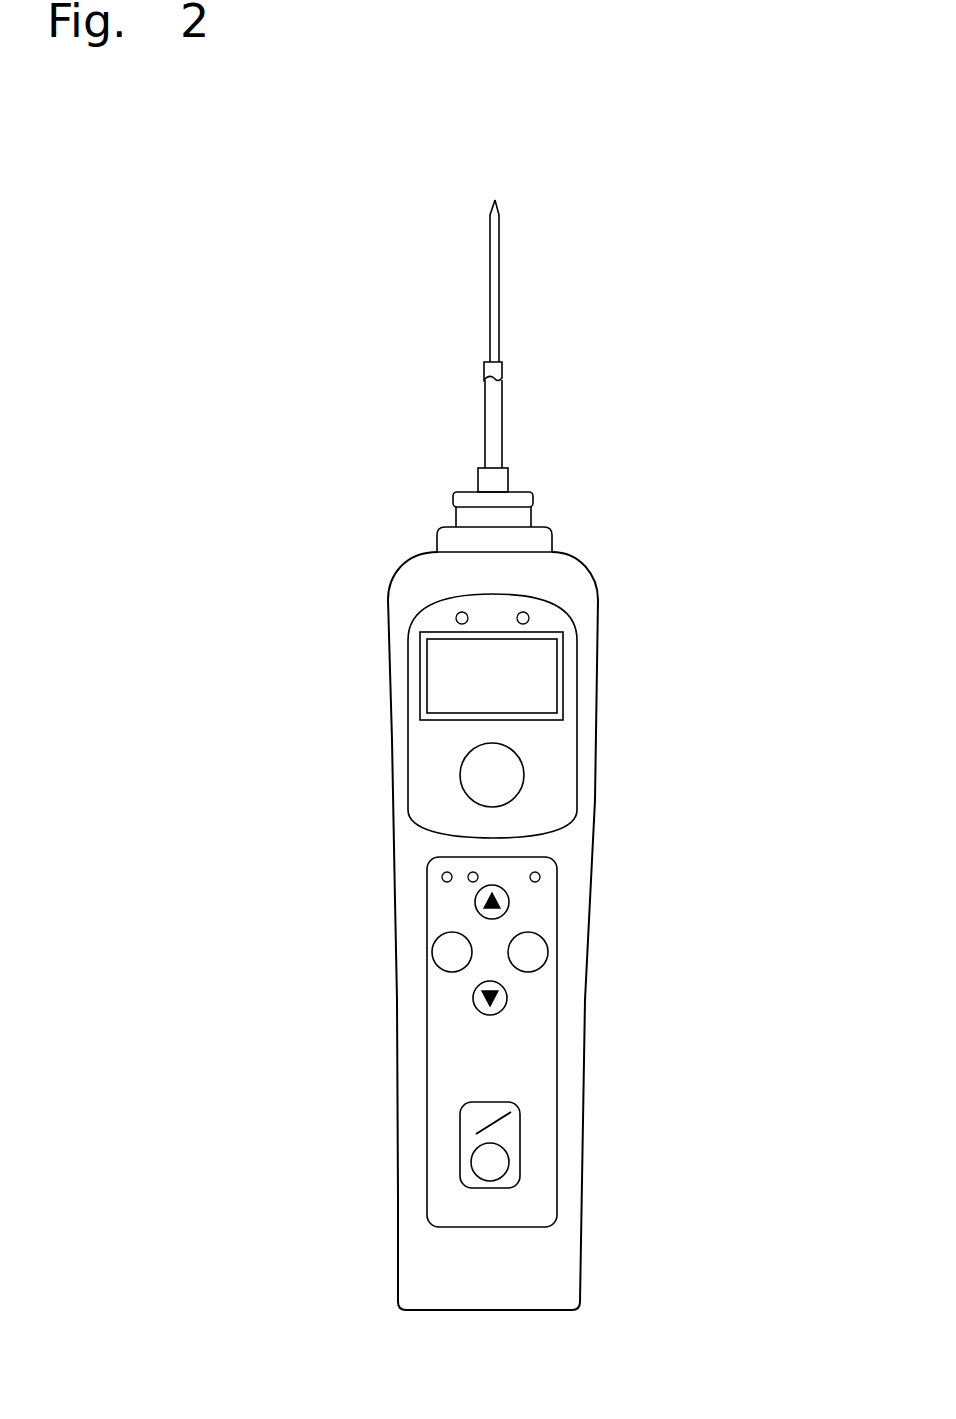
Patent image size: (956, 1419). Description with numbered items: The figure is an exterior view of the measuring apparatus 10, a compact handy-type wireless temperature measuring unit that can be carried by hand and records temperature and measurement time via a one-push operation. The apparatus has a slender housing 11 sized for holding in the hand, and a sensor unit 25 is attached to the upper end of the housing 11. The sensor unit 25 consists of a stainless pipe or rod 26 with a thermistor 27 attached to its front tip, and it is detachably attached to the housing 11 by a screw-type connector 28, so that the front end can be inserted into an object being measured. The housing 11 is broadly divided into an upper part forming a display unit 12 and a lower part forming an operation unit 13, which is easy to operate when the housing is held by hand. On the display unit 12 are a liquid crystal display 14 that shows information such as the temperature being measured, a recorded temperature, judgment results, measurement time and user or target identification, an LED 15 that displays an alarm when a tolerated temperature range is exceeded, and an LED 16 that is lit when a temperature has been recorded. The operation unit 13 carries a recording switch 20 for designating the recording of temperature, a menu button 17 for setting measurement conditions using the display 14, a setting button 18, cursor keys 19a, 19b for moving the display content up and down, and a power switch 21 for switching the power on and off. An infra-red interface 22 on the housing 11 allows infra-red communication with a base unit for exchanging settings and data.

The measuring apparatus 10 is at (608, 547).
The housing 11 is at (605, 572).
The display unit 12 is at (598, 673).
The operation unit 13 is at (602, 930).
The liquid crystal display 14 is at (455, 687).
The LED 15 is at (455, 618).
The LED 16 is at (530, 618).
The menu button 17 is at (437, 940).
The setting button 18 is at (547, 960).
The cursor key 19a is at (508, 902).
The cursor key 19b is at (508, 998).
The recording switch 20 is at (508, 790).
The power switch 21 is at (513, 1155).
The infra-red interface 22 is at (430, 873).
The sensor unit 25 is at (558, 338).
The stainless pipe 26 is at (505, 442).
The thermistor 27 is at (497, 213).
The screw-type connector 28 is at (455, 515).